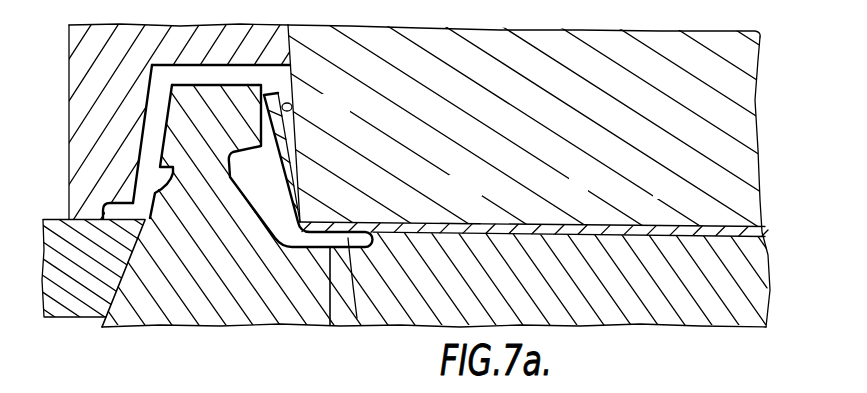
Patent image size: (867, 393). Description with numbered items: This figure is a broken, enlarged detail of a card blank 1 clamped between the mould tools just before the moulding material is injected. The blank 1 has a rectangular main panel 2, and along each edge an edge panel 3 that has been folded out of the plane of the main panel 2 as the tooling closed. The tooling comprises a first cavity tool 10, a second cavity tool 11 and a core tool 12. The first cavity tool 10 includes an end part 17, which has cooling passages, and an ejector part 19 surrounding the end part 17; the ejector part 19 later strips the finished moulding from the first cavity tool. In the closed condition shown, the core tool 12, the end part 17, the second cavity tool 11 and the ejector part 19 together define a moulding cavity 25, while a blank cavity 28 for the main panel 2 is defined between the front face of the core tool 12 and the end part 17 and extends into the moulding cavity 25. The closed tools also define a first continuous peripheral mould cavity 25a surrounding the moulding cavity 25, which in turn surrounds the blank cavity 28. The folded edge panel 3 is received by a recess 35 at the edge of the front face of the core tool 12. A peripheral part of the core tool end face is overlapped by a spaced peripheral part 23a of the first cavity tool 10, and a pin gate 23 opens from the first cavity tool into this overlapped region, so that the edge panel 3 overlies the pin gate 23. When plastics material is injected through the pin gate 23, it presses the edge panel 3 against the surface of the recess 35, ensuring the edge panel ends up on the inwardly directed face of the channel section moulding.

The blank 1 is at (669, 216).
The main panel 2 is at (583, 224).
The edge panel 3 is at (291, 157).
The first cavity tool 10 is at (738, 317).
The second cavity tool 11 is at (85, 41).
The core tool 12 is at (733, 60).
The first cavity tool end part 17 is at (672, 307).
The ejector part 19 is at (77, 303).
The pin gate 23 is at (342, 307).
The spaced peripheral part of the first cavity tool 23a is at (358, 320).
The moulding cavity 25 is at (253, 200).
The first continuous peripheral mould cavity 25a is at (149, 181).
The blank cavity 28 is at (460, 223).
The recess 35 is at (292, 107).